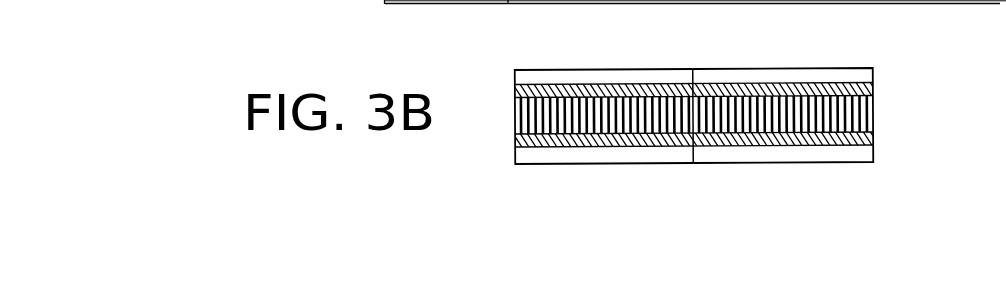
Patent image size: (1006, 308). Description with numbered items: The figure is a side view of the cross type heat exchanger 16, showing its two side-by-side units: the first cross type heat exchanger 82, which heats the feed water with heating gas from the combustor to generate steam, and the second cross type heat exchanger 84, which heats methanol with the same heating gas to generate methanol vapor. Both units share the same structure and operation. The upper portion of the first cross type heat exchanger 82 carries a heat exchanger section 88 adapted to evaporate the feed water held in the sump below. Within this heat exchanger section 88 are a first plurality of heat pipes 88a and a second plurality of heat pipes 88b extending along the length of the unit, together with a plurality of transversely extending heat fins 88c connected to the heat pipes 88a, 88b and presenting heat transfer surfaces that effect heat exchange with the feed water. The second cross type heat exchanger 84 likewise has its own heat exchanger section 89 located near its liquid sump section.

The cross type heat exchanger 16 is at (833, 64).
The heat exchanger section 88 is at (874, 69).
The first plurality of heat pipes 88a is at (870, 138).
The second plurality of heat pipes 88b is at (868, 89).
The heat fins 88c is at (870, 115).
The second cross type heat exchanger 84 is at (610, 69).
The first cross type heat exchanger 82 is at (765, 66).
The heat exchanger section 89 is at (521, 79).